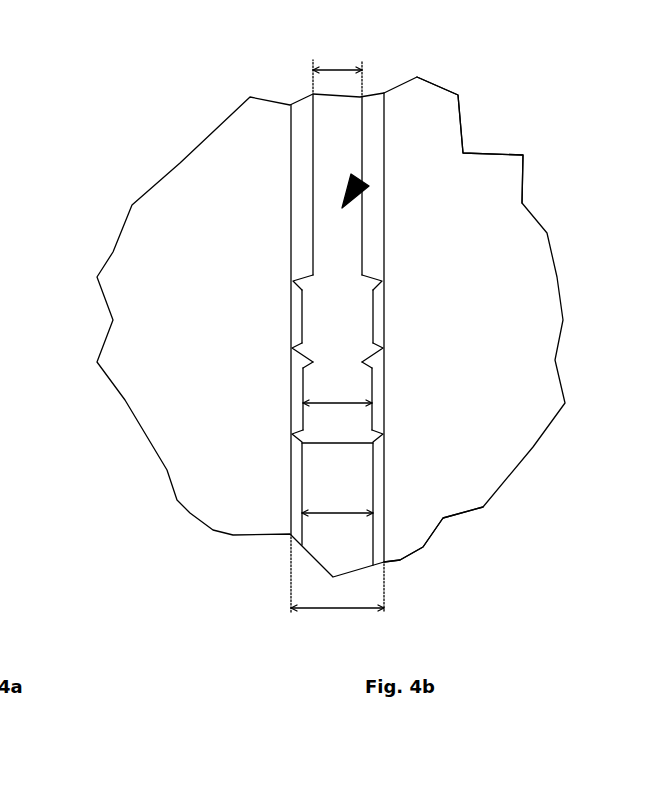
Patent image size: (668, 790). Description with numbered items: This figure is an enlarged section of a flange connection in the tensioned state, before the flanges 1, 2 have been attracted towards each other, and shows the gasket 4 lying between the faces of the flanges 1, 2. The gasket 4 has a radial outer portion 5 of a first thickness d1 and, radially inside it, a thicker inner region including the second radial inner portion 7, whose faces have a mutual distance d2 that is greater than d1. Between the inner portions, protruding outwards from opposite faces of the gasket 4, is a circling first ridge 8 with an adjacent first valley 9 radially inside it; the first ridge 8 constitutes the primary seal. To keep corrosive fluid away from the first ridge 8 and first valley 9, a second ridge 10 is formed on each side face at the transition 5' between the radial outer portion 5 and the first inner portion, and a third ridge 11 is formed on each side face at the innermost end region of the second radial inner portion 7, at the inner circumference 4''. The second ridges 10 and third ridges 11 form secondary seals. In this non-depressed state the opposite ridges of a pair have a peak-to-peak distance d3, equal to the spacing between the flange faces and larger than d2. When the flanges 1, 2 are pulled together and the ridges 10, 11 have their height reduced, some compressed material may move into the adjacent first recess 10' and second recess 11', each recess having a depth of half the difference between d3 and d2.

The flange 1 is at (190, 192).
The flange 2 is at (445, 165).
The gasket 4 is at (402, 124).
The inner circumference 4'' is at (265, 524).
The radial outer portion 5 is at (302, 312).
The transition 5' is at (213, 187).
The second radial inner portion 7 is at (421, 547).
The first ridge 8 is at (292, 348).
The first valley 9 is at (300, 365).
The second ridge 10 is at (315, 226).
The first recess 10' is at (335, 265).
The third ridge 11 is at (356, 448).
The second recess 11' is at (329, 422).
The first thickness d1 is at (337, 70).
The second thickness d2 is at (337, 448).
The first peak-to-peak distance d3 is at (337, 574).